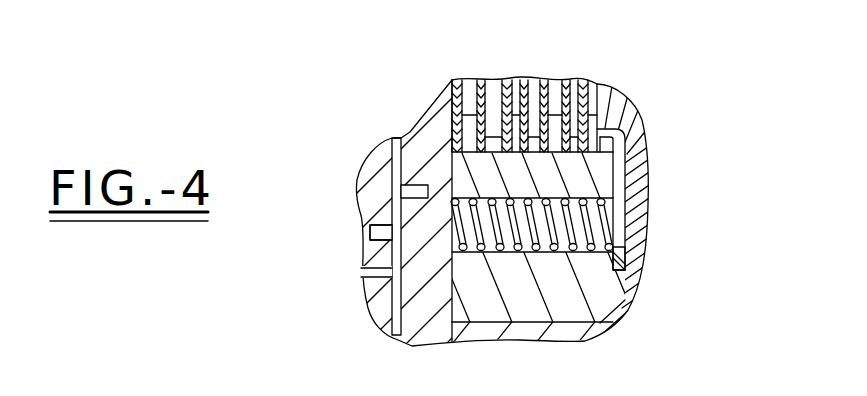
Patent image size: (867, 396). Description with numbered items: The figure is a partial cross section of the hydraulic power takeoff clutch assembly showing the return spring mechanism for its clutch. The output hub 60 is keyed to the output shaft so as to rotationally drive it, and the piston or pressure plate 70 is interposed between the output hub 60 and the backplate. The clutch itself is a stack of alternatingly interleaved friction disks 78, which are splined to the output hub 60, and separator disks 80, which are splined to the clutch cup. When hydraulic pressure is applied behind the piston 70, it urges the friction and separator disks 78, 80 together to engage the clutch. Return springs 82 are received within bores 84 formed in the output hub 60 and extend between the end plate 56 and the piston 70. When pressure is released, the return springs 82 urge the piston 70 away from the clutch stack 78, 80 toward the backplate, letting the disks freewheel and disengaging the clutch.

The end plate 56 is at (427, 137).
The friction disks 78 is at (580, 75).
The separator disks 80 is at (532, 116).
The bores 84 is at (574, 207).
The return springs 82 is at (626, 240).
The piston or pressure plate 70 is at (650, 198).
The output hub 60 is at (613, 296).